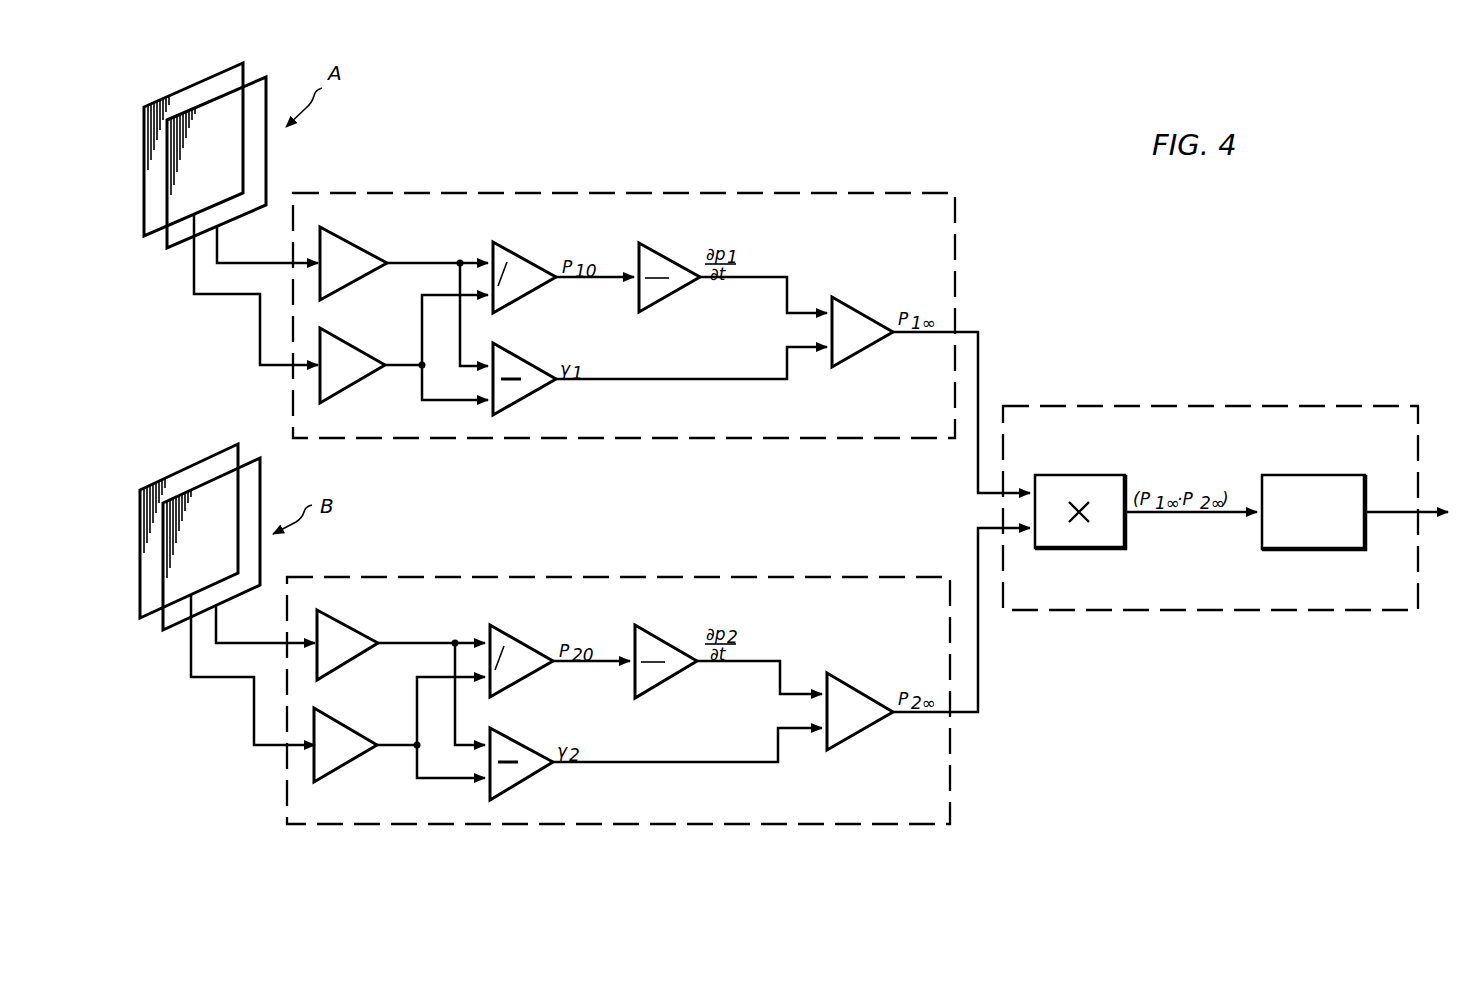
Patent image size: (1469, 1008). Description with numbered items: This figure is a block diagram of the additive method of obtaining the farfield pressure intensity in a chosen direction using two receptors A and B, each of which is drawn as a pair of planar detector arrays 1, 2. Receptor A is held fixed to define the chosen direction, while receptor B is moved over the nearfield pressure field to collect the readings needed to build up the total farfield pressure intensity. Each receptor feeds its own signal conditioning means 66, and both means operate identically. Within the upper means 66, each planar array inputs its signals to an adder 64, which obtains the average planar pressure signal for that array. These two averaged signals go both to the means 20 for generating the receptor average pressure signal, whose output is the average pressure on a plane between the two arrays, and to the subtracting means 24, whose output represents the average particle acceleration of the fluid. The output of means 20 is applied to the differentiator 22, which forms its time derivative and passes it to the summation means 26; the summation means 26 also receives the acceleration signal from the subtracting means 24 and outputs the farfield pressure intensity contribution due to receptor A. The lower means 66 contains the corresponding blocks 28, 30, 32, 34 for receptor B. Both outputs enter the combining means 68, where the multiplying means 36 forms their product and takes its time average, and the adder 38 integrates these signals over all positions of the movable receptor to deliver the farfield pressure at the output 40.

The first radiation detector 1 is at (268, 115).
The second radiation detector 2 is at (224, 63).
The means for generating the receptor average pressure signal 20 is at (523, 255).
The differentiator 22 is at (663, 255).
The subtracting means 24 is at (529, 358).
The summation means 26 is at (856, 305).
The half-sum amplifier 28 is at (517, 637).
The differentiator 30 is at (660, 637).
The difference amplifier 32 is at (527, 745).
The summing amplifier 34 is at (853, 683).
The multiplying means 36 is at (1072, 473).
The adder 38 is at (1315, 473).
The output 40 is at (1382, 510).
The adder 64 is at (362, 250).
The signal conditioning means 66 is at (555, 192).
The combining means 68 is at (1196, 405).